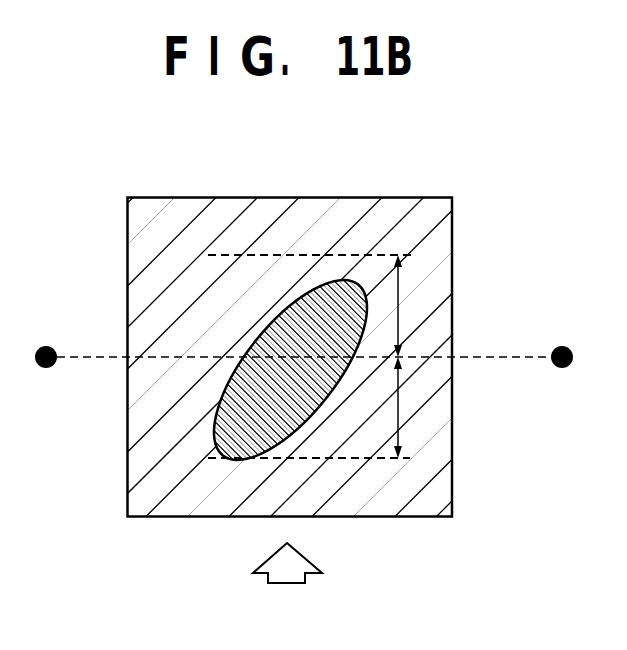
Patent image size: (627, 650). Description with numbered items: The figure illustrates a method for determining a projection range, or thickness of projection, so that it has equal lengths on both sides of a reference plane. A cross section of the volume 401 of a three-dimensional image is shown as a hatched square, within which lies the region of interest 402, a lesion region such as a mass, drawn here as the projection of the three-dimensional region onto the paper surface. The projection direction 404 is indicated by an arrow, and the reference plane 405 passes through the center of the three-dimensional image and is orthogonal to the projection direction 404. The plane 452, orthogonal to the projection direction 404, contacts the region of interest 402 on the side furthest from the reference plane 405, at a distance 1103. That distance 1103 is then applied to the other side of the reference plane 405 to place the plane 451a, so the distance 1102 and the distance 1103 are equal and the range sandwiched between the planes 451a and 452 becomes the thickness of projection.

The volume 401 is at (154, 216).
The region of interest 402 is at (217, 425).
The projection direction 404 is at (288, 583).
The reference plane 405 is at (563, 346).
The plane 451a is at (258, 254).
The plane 452 is at (376, 460).
The distance 1102 is at (398, 299).
The distance 1103 is at (400, 404).